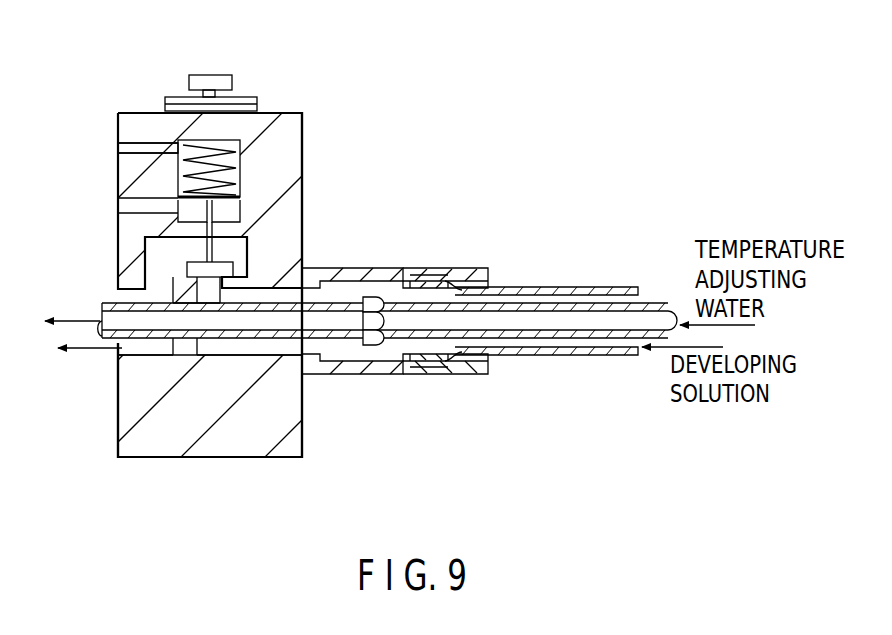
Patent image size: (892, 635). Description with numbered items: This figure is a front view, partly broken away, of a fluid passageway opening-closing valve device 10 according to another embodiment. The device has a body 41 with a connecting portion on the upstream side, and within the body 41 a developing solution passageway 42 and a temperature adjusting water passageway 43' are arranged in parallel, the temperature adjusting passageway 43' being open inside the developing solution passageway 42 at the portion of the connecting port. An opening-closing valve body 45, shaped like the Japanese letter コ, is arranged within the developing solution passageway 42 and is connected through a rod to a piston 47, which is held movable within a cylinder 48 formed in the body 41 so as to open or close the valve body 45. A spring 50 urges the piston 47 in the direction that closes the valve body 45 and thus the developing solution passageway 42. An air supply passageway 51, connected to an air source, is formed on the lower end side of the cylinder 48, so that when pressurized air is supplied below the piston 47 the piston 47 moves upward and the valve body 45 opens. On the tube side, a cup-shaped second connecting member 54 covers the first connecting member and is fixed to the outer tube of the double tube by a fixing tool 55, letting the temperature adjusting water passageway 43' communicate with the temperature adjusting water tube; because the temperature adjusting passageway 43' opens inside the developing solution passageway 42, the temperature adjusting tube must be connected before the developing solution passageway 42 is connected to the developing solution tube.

The opening-closing valve device 10 is at (330, 102).
The body 41 is at (313, 152).
The developing solution passageway 42 is at (270, 348).
The temperature adjusting water passageway 43' is at (196, 338).
The opening-closing valve body 45 is at (228, 263).
The piston 47 is at (240, 196).
The cylinder 48 is at (237, 143).
The spring 50 is at (178, 142).
The air supply passageway 51 is at (135, 208).
The second connecting member 54 is at (348, 375).
The fixing tool 55 is at (473, 375).